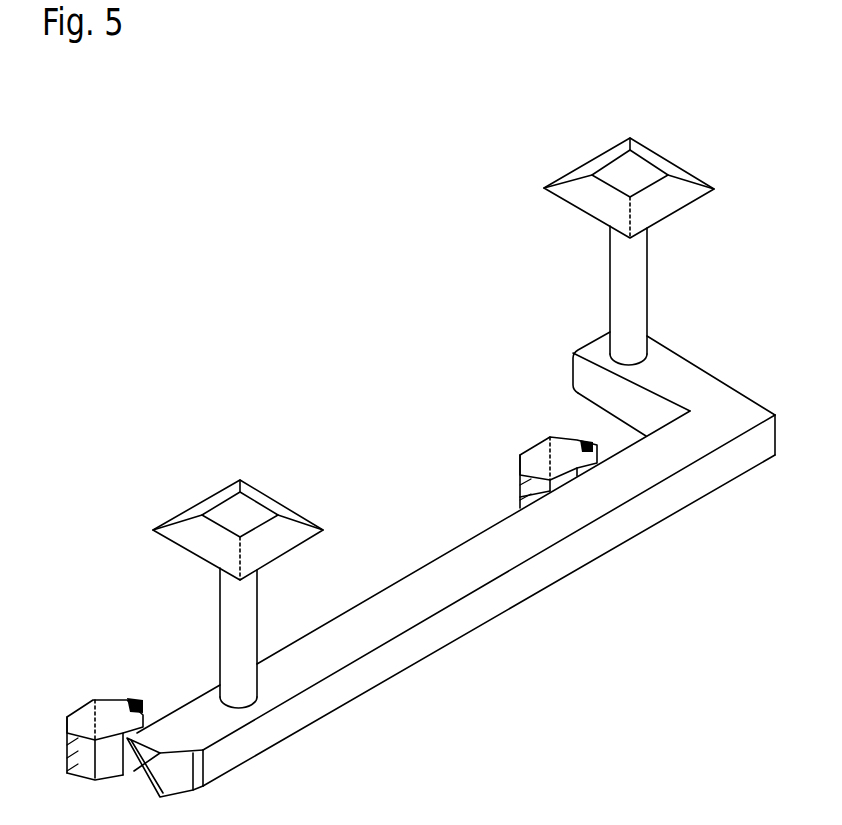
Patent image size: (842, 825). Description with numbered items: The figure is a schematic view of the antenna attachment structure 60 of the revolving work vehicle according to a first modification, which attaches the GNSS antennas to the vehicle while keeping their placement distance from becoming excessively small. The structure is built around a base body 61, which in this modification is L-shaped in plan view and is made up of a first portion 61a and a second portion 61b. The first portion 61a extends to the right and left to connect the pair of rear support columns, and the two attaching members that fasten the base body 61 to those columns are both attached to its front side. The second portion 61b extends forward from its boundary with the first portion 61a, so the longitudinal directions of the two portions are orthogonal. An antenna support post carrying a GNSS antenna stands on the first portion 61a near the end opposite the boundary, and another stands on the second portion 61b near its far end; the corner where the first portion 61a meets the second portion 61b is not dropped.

The antenna attachment structure 60 is at (300, 323).
The base body 61 is at (390, 291).
The first portion 61a is at (460, 560).
The second portion 61b is at (590, 411).